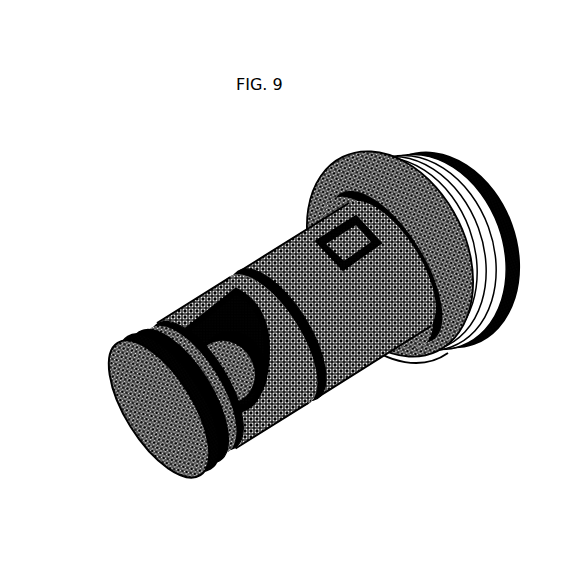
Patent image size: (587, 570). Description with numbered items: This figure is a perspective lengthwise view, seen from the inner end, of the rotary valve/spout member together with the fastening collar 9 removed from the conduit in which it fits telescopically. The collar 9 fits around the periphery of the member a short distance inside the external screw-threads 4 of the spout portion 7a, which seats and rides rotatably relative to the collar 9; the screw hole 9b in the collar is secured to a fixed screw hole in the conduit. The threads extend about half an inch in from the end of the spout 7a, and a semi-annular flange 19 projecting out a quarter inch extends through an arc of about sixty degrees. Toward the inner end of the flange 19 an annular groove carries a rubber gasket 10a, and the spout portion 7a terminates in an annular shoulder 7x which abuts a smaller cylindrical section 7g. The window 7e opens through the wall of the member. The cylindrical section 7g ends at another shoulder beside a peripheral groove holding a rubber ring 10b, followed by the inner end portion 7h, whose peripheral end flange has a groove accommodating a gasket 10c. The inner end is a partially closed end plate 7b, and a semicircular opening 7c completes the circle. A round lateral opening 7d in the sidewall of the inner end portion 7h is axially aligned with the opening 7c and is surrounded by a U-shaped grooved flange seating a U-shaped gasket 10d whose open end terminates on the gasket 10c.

The threads 4 is at (468, 165).
The spout portion 7a is at (398, 142).
The partially closed inner end 7b is at (121, 408).
The semicircular opening 7c is at (158, 425).
The round lateral opening 7d is at (192, 312).
The window 7e is at (323, 222).
The cylindrical section 7g is at (270, 248).
The inner end portion 7h is at (255, 423).
The annular shoulder 7x is at (413, 333).
The fastening collar 9 is at (340, 157).
The screw hole 9b is at (463, 313).
The gasket 10a is at (344, 171).
The rubber ring 10b is at (240, 262).
The gasket 10c is at (200, 465).
The U-shaped gasket 10d is at (178, 310).
The semi-annular flange 19 is at (480, 213).